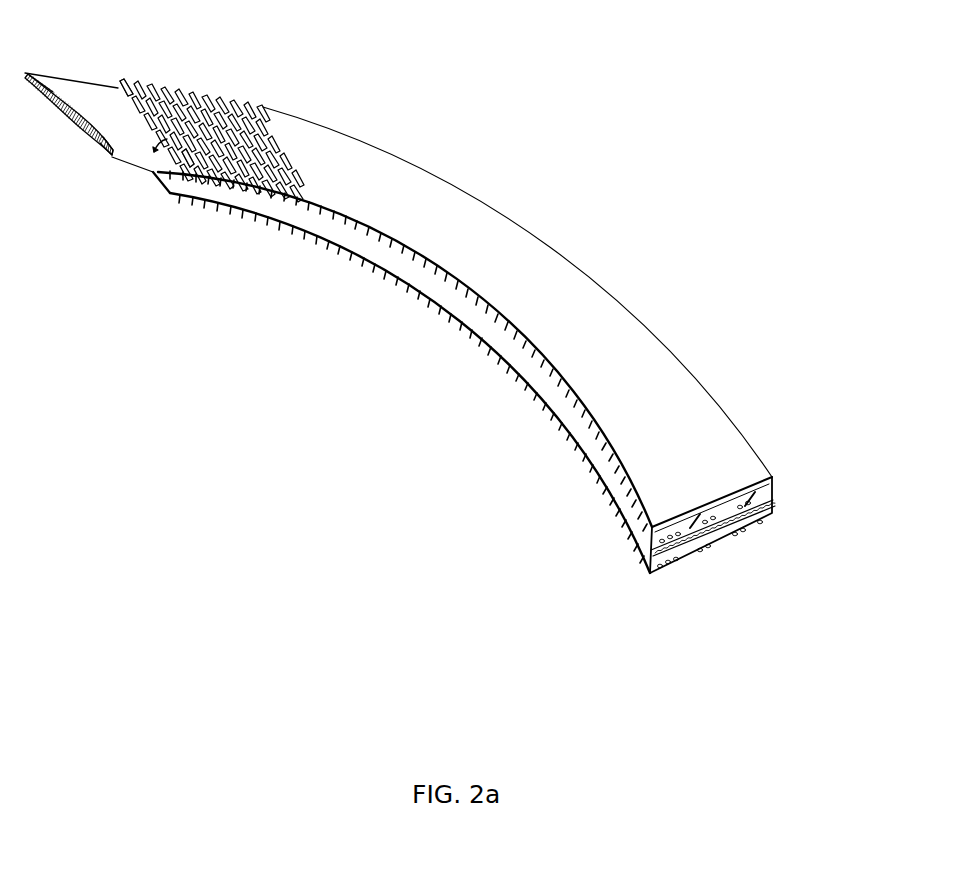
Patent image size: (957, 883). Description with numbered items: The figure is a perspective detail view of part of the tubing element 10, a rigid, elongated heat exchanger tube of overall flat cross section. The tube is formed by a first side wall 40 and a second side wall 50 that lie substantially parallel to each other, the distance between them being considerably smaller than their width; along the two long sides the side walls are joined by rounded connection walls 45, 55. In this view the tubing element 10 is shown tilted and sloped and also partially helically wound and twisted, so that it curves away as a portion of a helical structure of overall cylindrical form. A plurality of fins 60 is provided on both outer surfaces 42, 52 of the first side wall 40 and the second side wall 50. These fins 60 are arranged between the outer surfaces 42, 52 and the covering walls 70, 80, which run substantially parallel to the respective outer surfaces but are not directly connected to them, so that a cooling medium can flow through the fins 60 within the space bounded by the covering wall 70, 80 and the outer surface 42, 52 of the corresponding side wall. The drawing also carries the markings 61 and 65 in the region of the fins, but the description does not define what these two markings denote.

The tubing element 10 is at (325, 411).
The first side wall 40 is at (135, 140).
The outer surface of the first side wall 42 is at (103, 115).
The rounded connection wall 45 is at (560, 407).
The second side wall 50 is at (57, 105).
The outer surface of the second side wall 52 is at (100, 147).
The rounded connection wall 55 is at (775, 503).
The fins 60 is at (200, 95).
The pin axis 61 is at (185, 162).
The first pin 65 is at (132, 75).
The covering wall 70 is at (645, 348).
The covering wall 80 is at (593, 482).